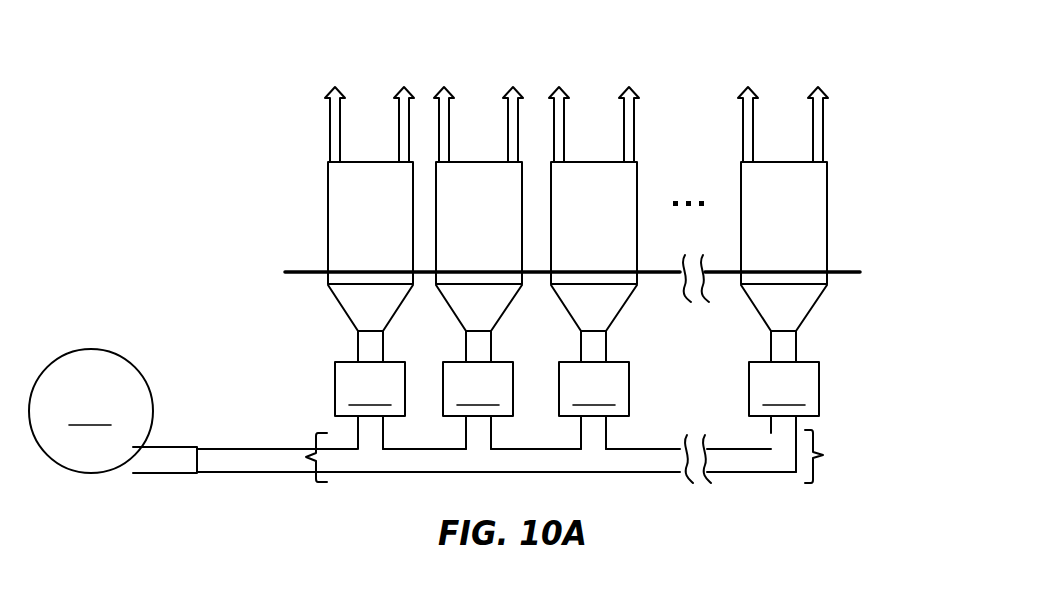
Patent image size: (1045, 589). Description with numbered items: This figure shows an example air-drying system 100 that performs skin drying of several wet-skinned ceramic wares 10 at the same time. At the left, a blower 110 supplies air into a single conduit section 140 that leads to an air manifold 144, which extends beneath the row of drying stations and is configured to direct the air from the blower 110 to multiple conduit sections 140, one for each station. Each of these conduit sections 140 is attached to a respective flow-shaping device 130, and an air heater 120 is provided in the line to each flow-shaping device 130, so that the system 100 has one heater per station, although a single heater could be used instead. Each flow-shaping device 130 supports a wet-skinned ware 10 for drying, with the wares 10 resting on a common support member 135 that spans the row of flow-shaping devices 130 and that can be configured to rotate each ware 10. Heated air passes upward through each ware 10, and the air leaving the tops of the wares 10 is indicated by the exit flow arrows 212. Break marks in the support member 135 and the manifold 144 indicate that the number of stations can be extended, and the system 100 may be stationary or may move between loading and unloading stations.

The air-drying system 100 is at (162, 246).
The ceramic ware 10 is at (330, 197).
The exhaust gas outlets 212 is at (405, 88).
The support member 135 is at (846, 272).
The flow-shaping device 130 is at (808, 313).
The air heater 120 is at (577, 389).
The blower 110 is at (113, 411).
The conduit section 140 is at (267, 447).
The air manifold 144 is at (823, 455).